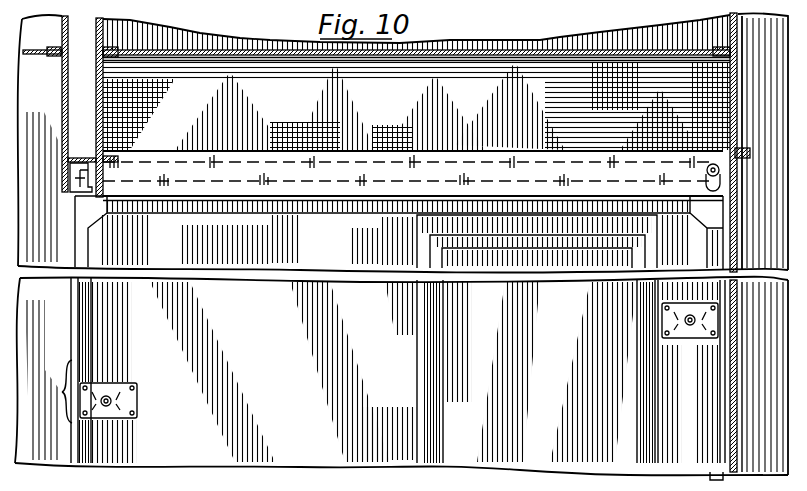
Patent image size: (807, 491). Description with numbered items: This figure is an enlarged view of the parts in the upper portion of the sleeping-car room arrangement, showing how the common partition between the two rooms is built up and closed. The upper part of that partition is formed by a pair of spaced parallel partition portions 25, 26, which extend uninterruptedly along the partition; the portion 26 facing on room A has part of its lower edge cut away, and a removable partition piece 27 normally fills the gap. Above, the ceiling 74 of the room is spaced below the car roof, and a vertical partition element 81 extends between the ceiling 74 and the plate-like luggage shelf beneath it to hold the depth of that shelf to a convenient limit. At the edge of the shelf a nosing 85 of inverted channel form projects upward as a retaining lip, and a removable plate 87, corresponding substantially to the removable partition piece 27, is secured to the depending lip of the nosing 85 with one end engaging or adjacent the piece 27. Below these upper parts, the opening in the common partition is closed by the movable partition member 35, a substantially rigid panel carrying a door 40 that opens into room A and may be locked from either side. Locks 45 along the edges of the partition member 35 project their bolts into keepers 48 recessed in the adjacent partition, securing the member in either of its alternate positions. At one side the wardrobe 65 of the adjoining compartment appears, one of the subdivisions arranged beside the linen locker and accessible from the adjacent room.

The partition portion 25 is at (62, 98).
The partition portion 26 is at (104, 113).
The removable partition piece 27 is at (118, 158).
The ceiling 74 is at (416, 58).
The vertical partition element 81 is at (654, 65).
The nosing 85 is at (408, 149).
The removable plate 87 is at (342, 163).
The wardrobe 65 is at (776, 201).
The movable partition member 35 is at (320, 368).
The door 40 is at (560, 372).
The lock 45 is at (120, 383).
The keeper 48 is at (62, 392).